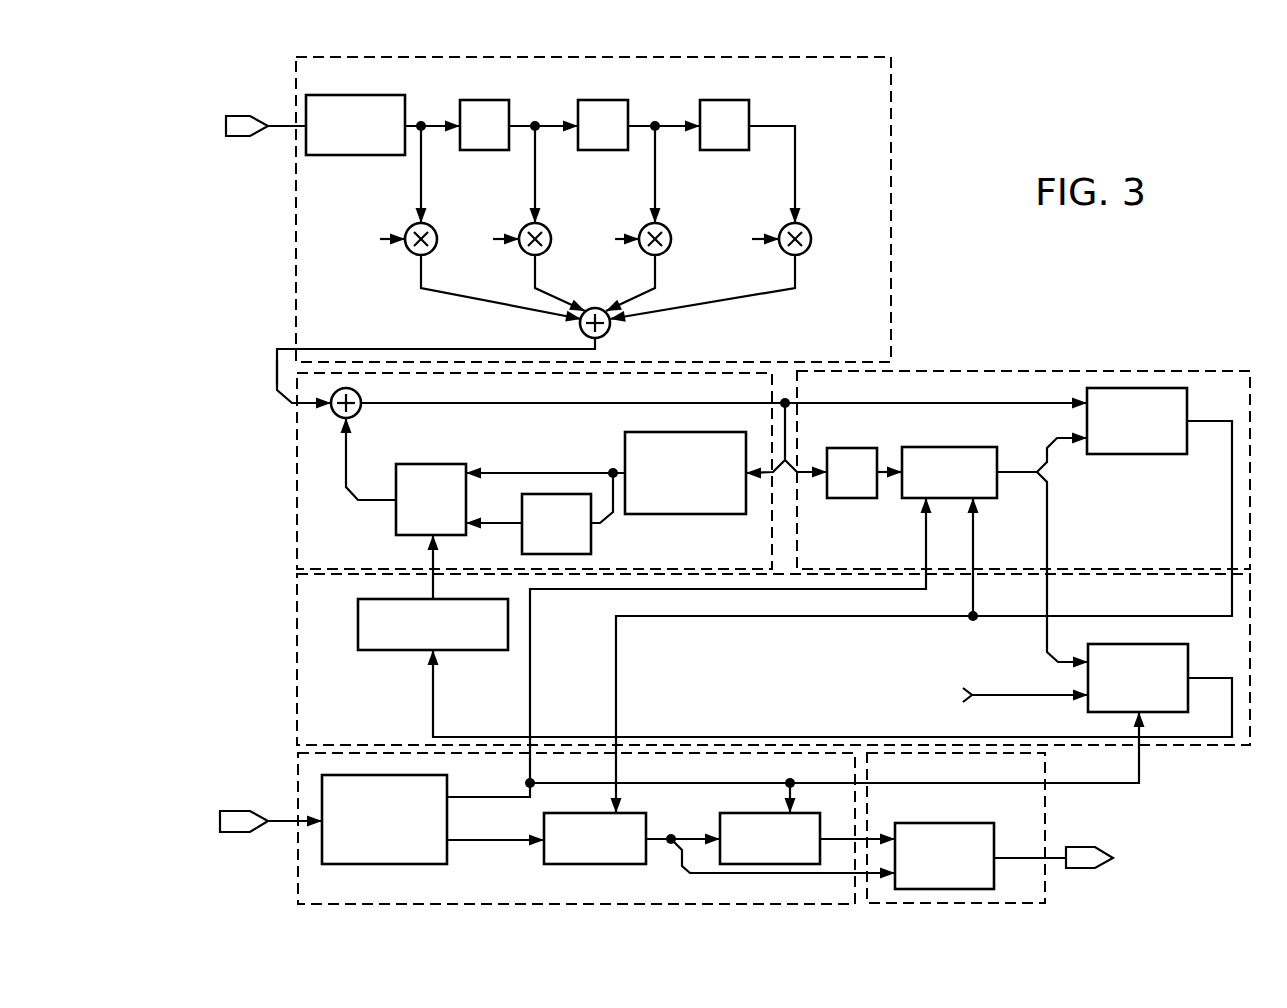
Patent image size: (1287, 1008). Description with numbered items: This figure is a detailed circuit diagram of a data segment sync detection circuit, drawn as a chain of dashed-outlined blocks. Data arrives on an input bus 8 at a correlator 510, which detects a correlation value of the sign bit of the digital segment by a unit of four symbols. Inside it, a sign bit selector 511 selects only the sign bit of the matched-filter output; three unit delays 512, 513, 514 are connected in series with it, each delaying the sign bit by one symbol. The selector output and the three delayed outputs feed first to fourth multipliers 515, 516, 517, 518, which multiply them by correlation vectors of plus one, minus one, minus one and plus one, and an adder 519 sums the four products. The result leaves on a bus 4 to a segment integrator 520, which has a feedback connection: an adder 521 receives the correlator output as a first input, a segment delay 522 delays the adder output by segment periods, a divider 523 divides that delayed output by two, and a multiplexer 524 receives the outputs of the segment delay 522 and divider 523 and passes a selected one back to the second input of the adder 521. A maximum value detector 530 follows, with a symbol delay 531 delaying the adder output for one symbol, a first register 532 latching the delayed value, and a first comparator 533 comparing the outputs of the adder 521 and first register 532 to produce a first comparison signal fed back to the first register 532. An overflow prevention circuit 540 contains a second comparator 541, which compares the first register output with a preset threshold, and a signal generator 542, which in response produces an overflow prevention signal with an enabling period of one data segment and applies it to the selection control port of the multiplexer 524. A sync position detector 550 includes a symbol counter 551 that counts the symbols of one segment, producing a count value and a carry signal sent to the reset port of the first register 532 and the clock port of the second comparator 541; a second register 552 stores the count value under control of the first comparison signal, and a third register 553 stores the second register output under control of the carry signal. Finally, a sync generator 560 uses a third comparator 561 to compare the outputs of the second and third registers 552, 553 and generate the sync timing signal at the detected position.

The 8-bit input bus 8 is at (286, 119).
The 4-bit bus 4 is at (283, 370).
The correlator 510 is at (898, 192).
The sign bit selector 511 is at (333, 95).
The unit delay 512 is at (484, 100).
The unit delay 513 is at (605, 100).
The unit delay 514 is at (725, 100).
The first multiplier 515 is at (430, 226).
The second multiplier 516 is at (545, 225).
The third multiplier 517 is at (665, 225).
The fourth multiplier 518 is at (805, 225).
The adder 519 is at (592, 310).
The segment integrator 520 is at (297, 488).
The adder 521 is at (362, 398).
The segment delay 522 is at (625, 443).
The divider 523 is at (591, 533).
The multiplexer 524 is at (445, 464).
The maximum value detector 530 is at (1015, 370).
The symbol delay 531 is at (852, 448).
The first register 532 is at (952, 447).
The first comparator 533 is at (1147, 454).
The overflow prevention circuit 540 is at (297, 635).
The second comparator 541 is at (1087, 683).
The signal generator 542 is at (467, 650).
The sync position detector 550 is at (298, 790).
The symbol counter 551 is at (447, 847).
The second register 552 is at (563, 864).
The third register 553 is at (720, 824).
The sync generator 560 is at (1045, 808).
The third comparator 561 is at (947, 823).